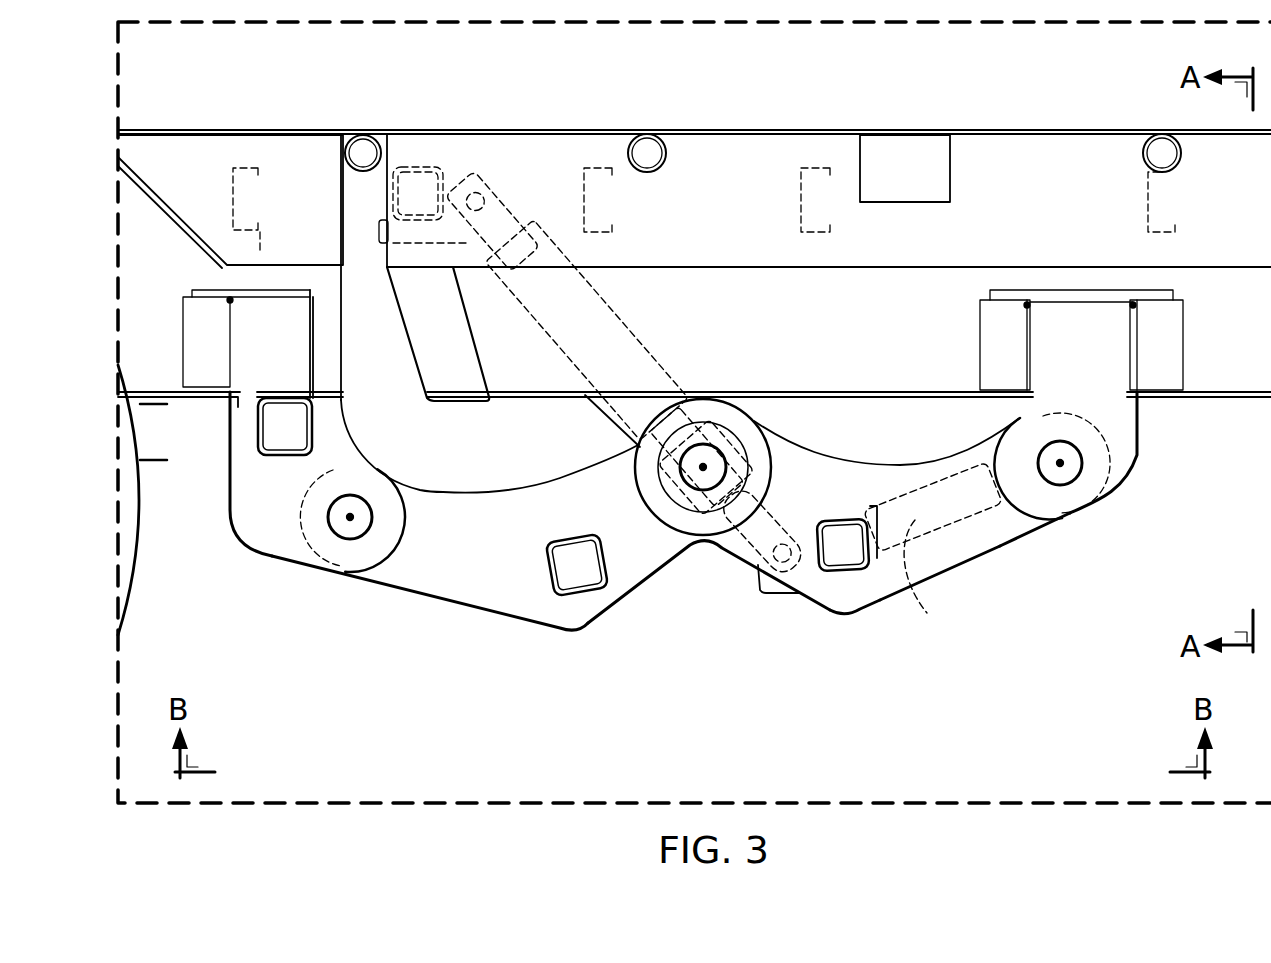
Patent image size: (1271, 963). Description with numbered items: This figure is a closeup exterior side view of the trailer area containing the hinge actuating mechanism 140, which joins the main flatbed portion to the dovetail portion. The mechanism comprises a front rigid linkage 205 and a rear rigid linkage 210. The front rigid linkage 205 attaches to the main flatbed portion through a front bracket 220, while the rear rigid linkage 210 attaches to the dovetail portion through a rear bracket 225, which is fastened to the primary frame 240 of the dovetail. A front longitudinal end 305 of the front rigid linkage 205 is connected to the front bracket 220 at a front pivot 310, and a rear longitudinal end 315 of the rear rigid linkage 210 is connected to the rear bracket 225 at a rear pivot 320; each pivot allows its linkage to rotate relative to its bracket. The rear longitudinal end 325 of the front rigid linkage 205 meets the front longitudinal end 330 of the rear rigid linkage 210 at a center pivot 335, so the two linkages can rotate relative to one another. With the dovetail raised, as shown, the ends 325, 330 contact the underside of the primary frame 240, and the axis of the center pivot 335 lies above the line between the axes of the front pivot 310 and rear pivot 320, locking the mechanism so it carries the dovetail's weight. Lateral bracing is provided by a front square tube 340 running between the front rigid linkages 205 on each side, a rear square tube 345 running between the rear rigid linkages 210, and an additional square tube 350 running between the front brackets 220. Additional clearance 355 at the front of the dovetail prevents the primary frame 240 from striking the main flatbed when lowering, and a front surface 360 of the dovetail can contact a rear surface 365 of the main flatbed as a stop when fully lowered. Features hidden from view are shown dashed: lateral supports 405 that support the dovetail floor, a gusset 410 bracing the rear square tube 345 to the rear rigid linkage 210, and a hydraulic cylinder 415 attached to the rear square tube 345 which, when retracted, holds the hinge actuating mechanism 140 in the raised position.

The hinge actuating mechanism 140 is at (875, 653).
The front rigid linkage 205 is at (485, 585).
The rear rigid linkage 210 is at (967, 560).
The front bracket 220 is at (230, 492).
The rear bracket 225 is at (1137, 442).
The primary frame 240 is at (735, 292).
The front longitudinal end 305 is at (403, 582).
The front pivot 310 is at (350, 517).
The rear longitudinal end 315 is at (1030, 520).
The rear pivot 320 is at (1070, 467).
The rear longitudinal end 325 is at (773, 475).
The front longitudinal end 330 is at (638, 492).
The center pivot 335 is at (703, 468).
The front square tube 340 is at (580, 595).
The rear square tube 345 is at (843, 573).
The additional square tube 350 is at (257, 418).
The additional clearance 355 is at (370, 345).
The front surface 360 is at (417, 377).
The rear surface 365 is at (350, 362).
The lateral supports 405 is at (802, 187).
The gusset 410 is at (910, 560).
The hydraulic cylinder 415 is at (642, 338).